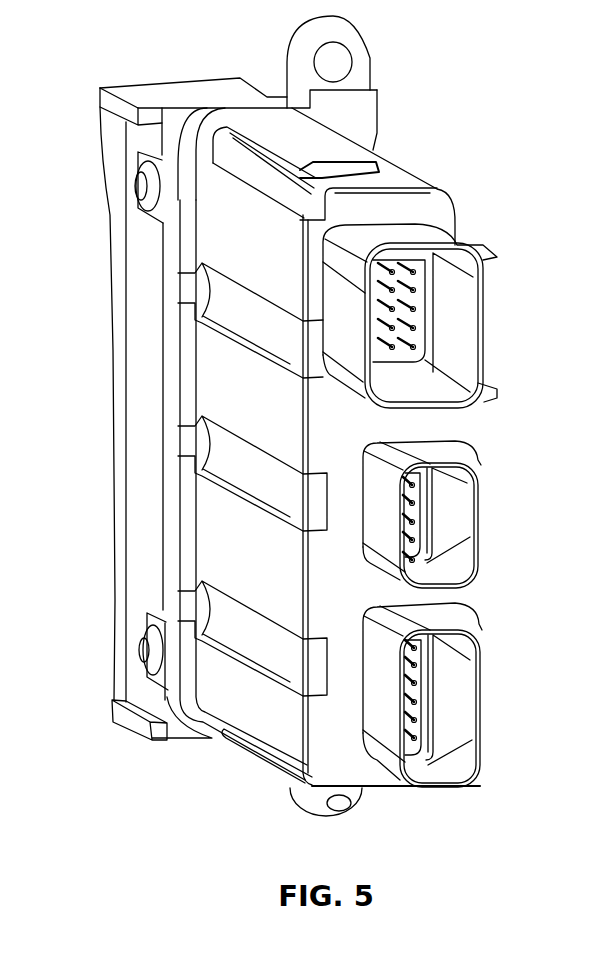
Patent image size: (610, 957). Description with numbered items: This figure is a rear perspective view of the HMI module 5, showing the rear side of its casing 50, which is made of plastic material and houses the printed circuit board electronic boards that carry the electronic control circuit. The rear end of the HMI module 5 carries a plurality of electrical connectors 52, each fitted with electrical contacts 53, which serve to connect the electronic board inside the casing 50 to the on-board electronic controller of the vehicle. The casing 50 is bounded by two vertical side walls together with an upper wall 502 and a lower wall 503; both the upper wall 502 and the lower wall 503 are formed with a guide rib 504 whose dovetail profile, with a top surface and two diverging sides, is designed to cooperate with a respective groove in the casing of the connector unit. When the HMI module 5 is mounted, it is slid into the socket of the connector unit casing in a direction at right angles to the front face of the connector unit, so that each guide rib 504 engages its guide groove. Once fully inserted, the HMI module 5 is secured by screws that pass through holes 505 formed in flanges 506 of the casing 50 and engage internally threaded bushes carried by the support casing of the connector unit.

The HMI module 5 is at (478, 78).
The casing 50 is at (135, 325).
The electrical connectors 52 is at (455, 283).
The electrical contacts 53 is at (420, 315).
The upper wall 502 is at (388, 181).
The lower wall 503 is at (390, 788).
The guide rib 504 is at (261, 118).
The holes 505 is at (340, 54).
The flanges 506 is at (290, 788).